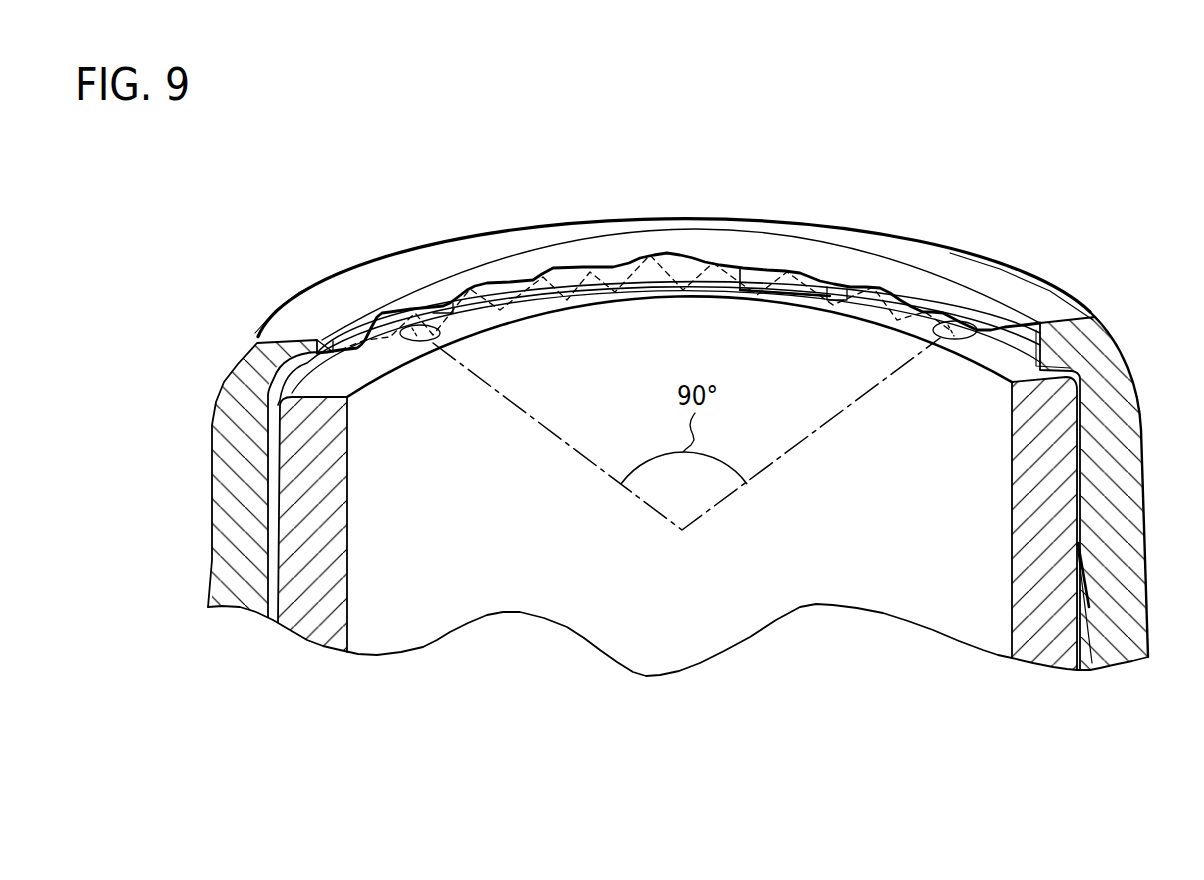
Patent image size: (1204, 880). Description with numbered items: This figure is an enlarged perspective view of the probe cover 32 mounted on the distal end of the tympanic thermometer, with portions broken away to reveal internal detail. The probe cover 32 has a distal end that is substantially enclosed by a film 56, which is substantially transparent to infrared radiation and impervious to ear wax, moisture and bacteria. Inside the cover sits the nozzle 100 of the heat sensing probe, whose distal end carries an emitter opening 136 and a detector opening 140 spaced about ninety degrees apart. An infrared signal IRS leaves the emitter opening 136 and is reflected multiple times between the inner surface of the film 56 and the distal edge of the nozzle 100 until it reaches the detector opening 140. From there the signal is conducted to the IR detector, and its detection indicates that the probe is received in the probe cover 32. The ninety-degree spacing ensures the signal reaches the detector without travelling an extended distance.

The probe cover 32 is at (307, 292).
The film 56 is at (838, 262).
The infrared signal IRS is at (628, 262).
The emitter opening 136 is at (423, 333).
The detector opening 140 is at (947, 327).
The nozzle 100 is at (417, 610).